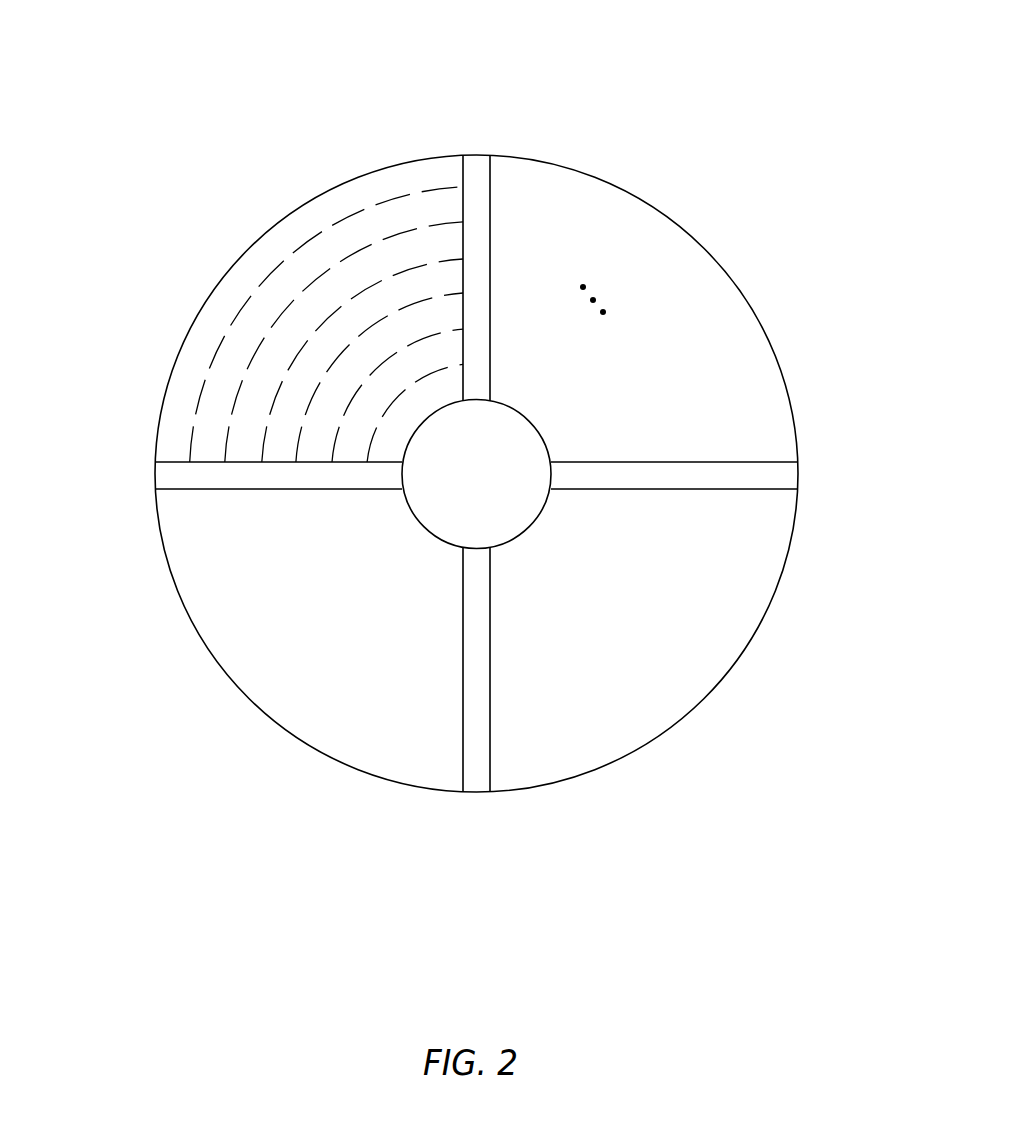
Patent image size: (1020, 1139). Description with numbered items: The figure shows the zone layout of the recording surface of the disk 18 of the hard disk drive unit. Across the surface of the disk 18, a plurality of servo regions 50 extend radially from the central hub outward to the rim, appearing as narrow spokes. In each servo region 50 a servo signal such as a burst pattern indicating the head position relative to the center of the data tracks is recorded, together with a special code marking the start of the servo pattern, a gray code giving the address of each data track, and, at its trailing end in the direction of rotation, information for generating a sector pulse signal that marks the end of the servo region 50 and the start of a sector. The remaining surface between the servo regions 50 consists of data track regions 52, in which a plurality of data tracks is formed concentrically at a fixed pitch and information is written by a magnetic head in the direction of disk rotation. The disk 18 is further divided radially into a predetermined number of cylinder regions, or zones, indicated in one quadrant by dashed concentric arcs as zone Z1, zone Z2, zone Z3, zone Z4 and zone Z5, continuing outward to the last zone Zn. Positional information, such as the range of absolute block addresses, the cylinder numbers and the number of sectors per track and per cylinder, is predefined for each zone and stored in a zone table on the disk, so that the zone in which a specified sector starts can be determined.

The disk 18 is at (695, 233).
The servo region 50 is at (480, 160).
The data track region 52 is at (302, 227).
The zone Z1 is at (187, 383).
The zone Z2 is at (242, 352).
The zone Z3 is at (298, 322).
The zone Z4 is at (382, 300).
The zone Z5 is at (450, 356).
The zone Zn is at (503, 393).